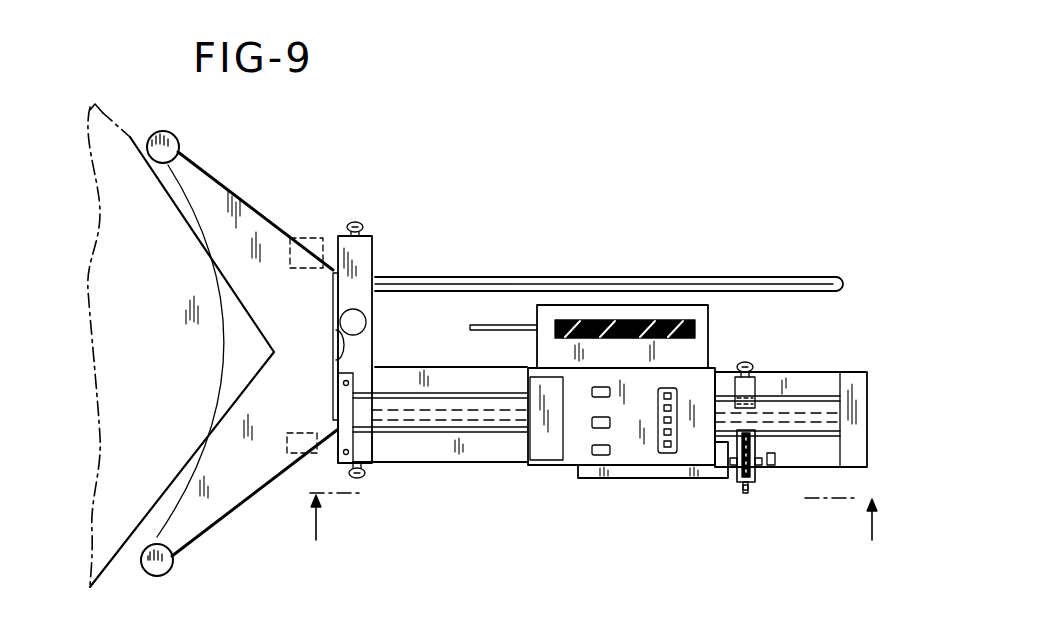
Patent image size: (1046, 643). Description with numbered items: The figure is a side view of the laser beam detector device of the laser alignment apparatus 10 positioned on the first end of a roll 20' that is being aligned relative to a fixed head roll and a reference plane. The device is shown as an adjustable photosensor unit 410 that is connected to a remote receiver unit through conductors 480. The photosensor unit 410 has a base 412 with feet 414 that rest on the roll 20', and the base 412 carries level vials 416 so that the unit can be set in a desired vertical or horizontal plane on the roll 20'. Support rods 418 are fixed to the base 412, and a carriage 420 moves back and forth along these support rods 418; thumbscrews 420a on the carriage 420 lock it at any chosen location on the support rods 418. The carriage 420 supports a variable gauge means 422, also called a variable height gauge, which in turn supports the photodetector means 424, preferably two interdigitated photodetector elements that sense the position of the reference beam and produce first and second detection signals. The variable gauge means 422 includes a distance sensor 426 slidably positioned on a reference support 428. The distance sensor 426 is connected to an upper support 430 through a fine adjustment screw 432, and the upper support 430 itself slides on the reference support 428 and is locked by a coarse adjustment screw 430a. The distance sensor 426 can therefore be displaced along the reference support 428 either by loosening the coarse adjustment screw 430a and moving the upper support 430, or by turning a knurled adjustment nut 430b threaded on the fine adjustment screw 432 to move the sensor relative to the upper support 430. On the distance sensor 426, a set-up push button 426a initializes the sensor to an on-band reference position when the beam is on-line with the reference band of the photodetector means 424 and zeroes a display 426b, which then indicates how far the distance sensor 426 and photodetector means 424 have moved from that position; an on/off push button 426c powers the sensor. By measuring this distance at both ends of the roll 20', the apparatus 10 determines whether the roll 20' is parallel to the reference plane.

The roll 20' is at (174, 319).
The laser alignment apparatus 10 is at (596, 536).
The adjustable photosensor unit 410 is at (597, 261).
The base 412 is at (253, 217).
The feet 414 is at (198, 173).
The level vials 416 is at (312, 235).
The support rods 418 is at (760, 277).
The carriage 420 is at (372, 255).
The thumbscrews 420a is at (362, 224).
The variable gauge means 422 is at (700, 467).
The photodetector means 424 is at (708, 322).
The distance sensor 426 is at (632, 466).
The push button 426a is at (603, 455).
The display 426b is at (668, 437).
The on/off push button 426c is at (594, 421).
The reference support 428 is at (437, 415).
The upper support 430 is at (760, 492).
The coarse adjustment screw 430a is at (753, 367).
The knurled adjustment nut 430b is at (747, 490).
The fine adjustment screw 432 is at (757, 473).
The conductors 480 is at (457, 327).